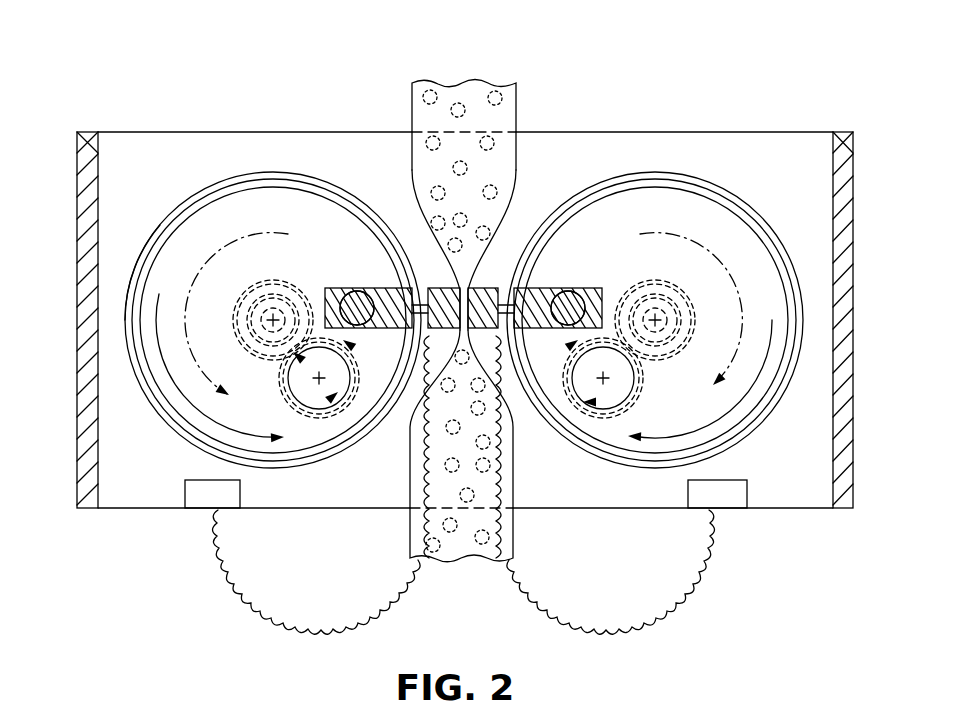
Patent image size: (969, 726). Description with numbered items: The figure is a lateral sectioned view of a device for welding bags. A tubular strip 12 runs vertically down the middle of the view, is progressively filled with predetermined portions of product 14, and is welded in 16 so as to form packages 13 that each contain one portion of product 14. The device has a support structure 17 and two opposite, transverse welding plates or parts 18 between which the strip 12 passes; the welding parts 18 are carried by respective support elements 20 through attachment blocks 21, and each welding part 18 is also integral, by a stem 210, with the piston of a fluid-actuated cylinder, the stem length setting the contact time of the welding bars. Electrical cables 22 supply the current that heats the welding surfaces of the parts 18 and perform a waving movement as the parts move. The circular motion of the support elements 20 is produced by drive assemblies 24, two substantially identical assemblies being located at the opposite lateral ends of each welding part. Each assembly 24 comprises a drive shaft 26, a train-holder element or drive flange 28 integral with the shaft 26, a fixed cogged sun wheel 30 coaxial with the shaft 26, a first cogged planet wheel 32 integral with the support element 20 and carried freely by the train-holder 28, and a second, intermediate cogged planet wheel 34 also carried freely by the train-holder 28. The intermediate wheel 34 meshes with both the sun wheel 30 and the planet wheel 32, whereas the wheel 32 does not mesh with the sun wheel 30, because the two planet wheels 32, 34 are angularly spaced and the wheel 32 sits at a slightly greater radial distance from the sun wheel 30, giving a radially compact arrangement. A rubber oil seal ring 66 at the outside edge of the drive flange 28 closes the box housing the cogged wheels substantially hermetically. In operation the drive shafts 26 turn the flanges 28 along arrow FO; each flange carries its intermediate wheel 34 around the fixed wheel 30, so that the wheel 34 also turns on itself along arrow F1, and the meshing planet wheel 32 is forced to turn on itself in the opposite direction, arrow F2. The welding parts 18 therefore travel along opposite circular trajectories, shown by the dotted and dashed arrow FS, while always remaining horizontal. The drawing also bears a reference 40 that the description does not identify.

The tubular strip 12 is at (516, 90).
The packages 13 is at (486, 576).
The predetermined portions of product 14 is at (455, 110).
The welding point 16 is at (480, 288).
The support structure 17 is at (79, 132).
The welding plates or parts 18 is at (412, 290).
The support elements 20 is at (335, 282).
The attachment blocks 21 is at (380, 289).
The electrical cables 22 is at (247, 598).
The drive assemblies 24 is at (168, 190).
The drive shaft 26 is at (252, 285).
The train-holder element 28 is at (166, 258).
The fixed cogged sun wheel 30 is at (266, 280).
The first cogged planet wheel 32 is at (348, 288).
The second intermediate cogged planet wheel 34 is at (312, 419).
The roller surface 40 is at (160, 225).
The rubber oil seal ring 66 is at (205, 190).
The stem 210 is at (362, 335).
The arrow F1 is at (300, 410).
The arrow F2 is at (336, 418).
The arrow FS is at (191, 290).
The arrow FO is at (170, 378).